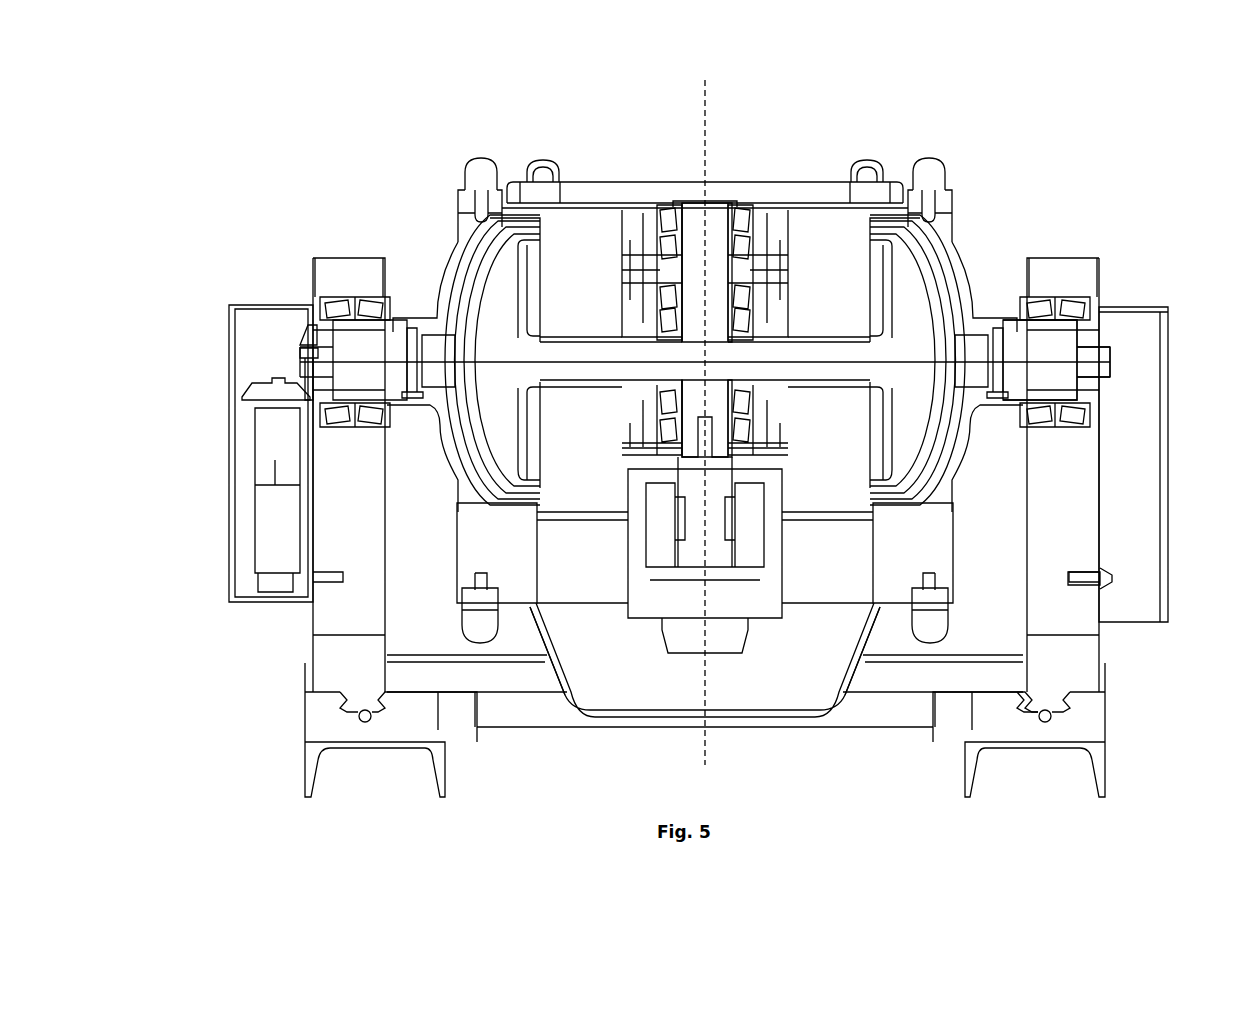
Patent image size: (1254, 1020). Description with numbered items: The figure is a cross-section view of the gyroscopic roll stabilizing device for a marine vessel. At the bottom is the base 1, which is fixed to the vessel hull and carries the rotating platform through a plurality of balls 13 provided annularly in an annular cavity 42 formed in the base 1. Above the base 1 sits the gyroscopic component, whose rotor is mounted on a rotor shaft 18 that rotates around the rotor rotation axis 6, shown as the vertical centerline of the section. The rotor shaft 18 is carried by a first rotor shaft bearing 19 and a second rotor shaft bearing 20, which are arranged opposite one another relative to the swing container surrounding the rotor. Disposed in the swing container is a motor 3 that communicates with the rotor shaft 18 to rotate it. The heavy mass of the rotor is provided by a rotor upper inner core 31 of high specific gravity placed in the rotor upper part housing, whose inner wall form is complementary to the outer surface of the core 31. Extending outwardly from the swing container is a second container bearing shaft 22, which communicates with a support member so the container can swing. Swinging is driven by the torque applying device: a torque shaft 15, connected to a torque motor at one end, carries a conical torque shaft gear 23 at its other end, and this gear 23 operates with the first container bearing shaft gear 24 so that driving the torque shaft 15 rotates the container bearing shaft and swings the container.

The base 1 is at (1102, 713).
The motor 3 is at (582, 572).
The rotor rotation axis 6 is at (700, 108).
The balls 13 is at (345, 702).
The torque shaft 15 is at (267, 544).
The rotor shaft 18 is at (725, 213).
The first rotor shaft bearing 19 is at (365, 300).
The second rotor shaft bearing 20 is at (1077, 308).
The second container bearing shaft 22 is at (1062, 353).
The torque shaft gear 23 is at (248, 393).
The first container bearing shaft gear 24 is at (310, 337).
The rotor upper inner core 31 is at (495, 303).
The annular cavity 42 is at (1030, 715).